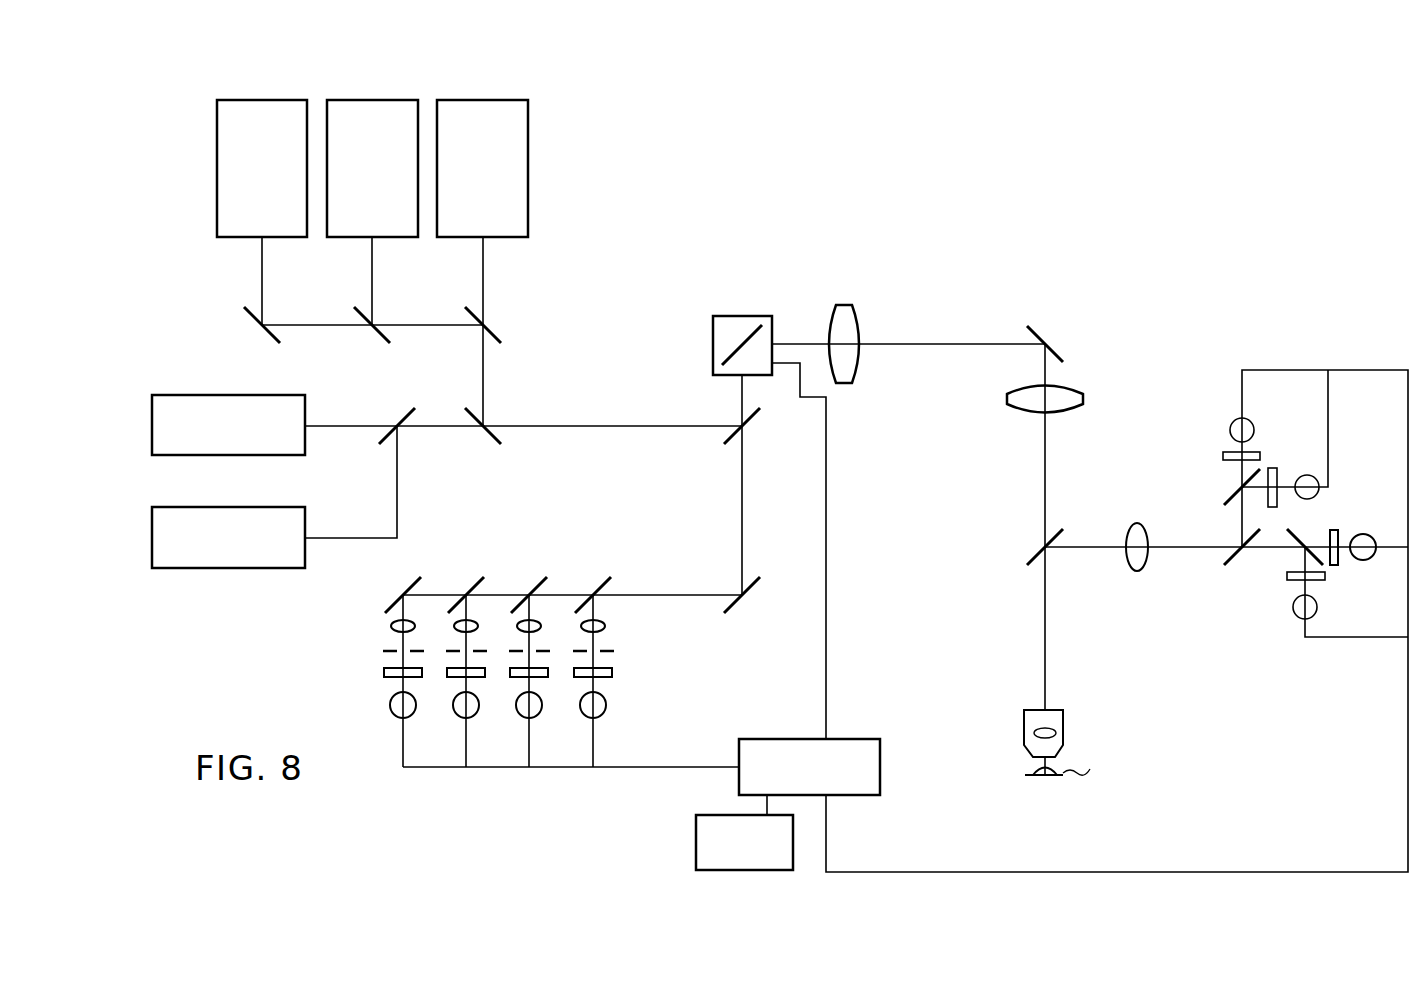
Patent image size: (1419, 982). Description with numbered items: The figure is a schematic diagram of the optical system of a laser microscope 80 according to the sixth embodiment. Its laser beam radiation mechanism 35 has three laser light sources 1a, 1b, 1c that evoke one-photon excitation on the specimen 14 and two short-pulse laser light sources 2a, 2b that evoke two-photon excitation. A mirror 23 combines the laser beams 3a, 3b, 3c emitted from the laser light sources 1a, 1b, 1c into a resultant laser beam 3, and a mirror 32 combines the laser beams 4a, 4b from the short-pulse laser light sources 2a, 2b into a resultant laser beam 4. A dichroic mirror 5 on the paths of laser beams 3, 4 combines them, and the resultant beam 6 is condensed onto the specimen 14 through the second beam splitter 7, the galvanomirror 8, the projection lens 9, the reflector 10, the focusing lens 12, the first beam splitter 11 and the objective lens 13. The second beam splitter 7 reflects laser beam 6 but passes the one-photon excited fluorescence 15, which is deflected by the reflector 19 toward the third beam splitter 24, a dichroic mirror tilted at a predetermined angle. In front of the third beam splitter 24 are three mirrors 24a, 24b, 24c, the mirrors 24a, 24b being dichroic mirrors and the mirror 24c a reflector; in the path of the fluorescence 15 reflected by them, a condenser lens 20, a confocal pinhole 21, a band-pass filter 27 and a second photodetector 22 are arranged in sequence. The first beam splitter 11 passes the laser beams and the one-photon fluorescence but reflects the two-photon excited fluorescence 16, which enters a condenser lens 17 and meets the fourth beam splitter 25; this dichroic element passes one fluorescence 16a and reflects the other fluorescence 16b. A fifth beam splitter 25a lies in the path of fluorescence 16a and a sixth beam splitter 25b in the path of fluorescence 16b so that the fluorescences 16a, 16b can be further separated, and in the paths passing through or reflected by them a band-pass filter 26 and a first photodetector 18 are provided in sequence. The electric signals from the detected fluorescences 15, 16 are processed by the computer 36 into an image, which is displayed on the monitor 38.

The laser light source 1a is at (530, 176).
The laser light source 1b is at (373, 100).
The laser light source 1c is at (217, 176).
The short-pulse laser light source 2a is at (196, 395).
The short-pulse laser light source 2b is at (200, 570).
The laser beam 3 is at (502, 398).
The laser beam 3a is at (503, 268).
The laser beam 3b is at (393, 268).
The laser beam 3c is at (283, 268).
The laser beam 4 is at (463, 445).
The laser beam 4a is at (368, 408).
The laser beam 4b is at (368, 518).
The dichroic mirror 5 is at (493, 447).
The resultant beam 6 is at (620, 407).
The second beam splitter 7 is at (760, 425).
The galvanomirror 8 is at (753, 325).
The projection lens 9 is at (843, 304).
The reflector 10 is at (1037, 326).
The first beam splitter 11 is at (1030, 553).
The focusing lens 12 is at (1006, 398).
The objective lens 13 is at (1024, 723).
The specimen 14 is at (1033, 772).
The 1-photon excited fluorescence 15 is at (723, 495).
The 2-photon excited fluorescence 16 is at (1115, 528).
The 2-photon excited fluorescence 16a is at (1293, 558).
The 2-photon excited fluorescence 16b is at (1229, 513).
The condenser lens 17 is at (1136, 572).
The first photodetector 18 is at (1367, 561).
The reflector 19 is at (733, 610).
The condenser lens 20 is at (605, 625).
The confocal pinhole 21 is at (614, 645).
The second photodetector 22 is at (607, 705).
The mirror 23 is at (500, 333).
The third beam splitter 24 is at (602, 578).
The mirror 24a is at (538, 578).
The mirror 24b is at (475, 578).
The mirror 24c is at (415, 578).
The fourth beam splitter 25 is at (1233, 573).
The fifth beam splitter 25a is at (1299, 527).
The sixth beam splitter 25b is at (1225, 493).
The band-pass filter 26 is at (1337, 568).
The band-pass filter 27 is at (613, 672).
The mirror 32 is at (406, 408).
The laser beam radiation mechanism 35 is at (548, 456).
The computer 36 is at (862, 738).
The monitor 38 is at (696, 845).
The laser microscope 80 is at (1155, 252).